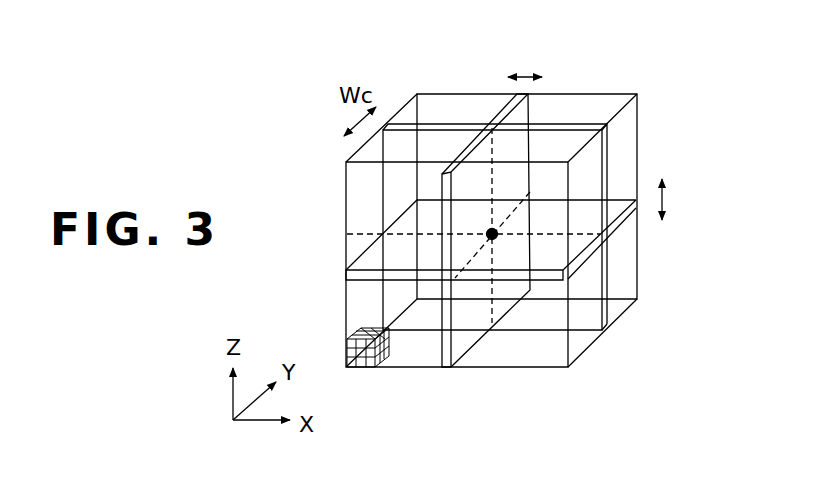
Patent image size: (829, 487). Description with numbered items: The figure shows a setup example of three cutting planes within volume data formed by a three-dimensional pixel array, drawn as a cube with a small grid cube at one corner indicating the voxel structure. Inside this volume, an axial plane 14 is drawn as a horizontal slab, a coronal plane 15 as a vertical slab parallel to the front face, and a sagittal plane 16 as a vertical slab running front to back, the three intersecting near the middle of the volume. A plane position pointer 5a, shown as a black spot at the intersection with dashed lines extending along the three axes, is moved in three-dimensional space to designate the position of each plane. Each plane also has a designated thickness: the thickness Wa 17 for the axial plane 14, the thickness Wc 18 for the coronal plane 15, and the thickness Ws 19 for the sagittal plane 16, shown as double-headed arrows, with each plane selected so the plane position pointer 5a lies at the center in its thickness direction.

The plane position pointer 5a is at (496, 239).
The axial plane 14 is at (622, 227).
The coronal plane 15 is at (381, 198).
The sagittal plane 16 is at (534, 114).
The thickness Wa 17 is at (664, 205).
The thickness Wc 18 is at (349, 124).
The thickness Ws 19 is at (525, 75).